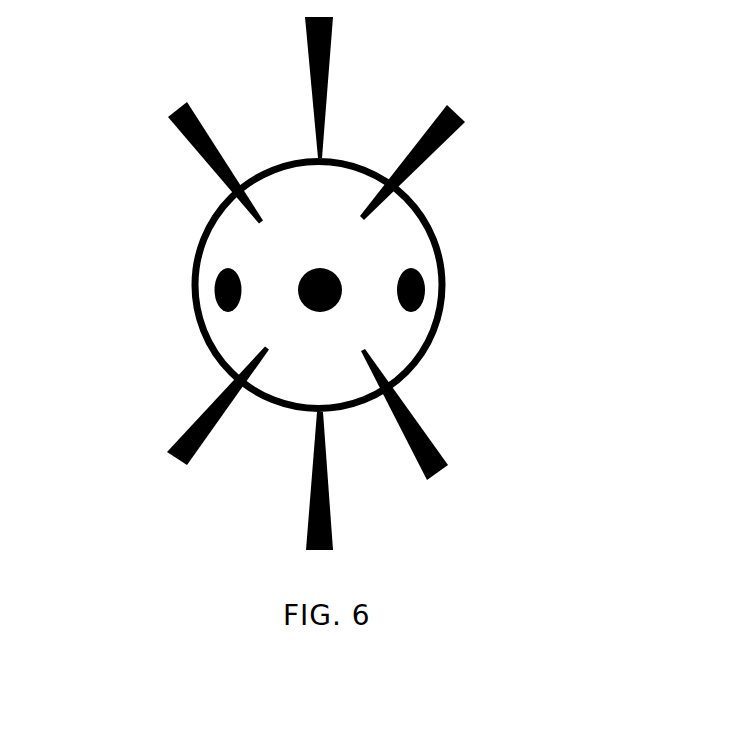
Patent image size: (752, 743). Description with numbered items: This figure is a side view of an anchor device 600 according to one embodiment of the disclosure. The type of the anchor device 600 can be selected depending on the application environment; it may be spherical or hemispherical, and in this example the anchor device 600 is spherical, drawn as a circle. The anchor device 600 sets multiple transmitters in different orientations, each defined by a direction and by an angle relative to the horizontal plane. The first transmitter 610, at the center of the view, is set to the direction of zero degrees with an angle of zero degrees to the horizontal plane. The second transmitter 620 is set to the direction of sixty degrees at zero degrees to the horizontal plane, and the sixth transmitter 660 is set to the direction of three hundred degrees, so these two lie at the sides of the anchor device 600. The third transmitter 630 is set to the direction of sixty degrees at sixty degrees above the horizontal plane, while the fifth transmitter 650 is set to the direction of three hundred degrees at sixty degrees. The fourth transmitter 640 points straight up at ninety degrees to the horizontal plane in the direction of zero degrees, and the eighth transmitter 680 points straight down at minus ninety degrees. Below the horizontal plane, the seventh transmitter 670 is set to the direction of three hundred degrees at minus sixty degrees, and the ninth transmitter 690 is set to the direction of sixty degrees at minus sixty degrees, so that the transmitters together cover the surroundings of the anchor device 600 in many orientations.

The anchor device 600 is at (443, 247).
The first transmitter 610 is at (302, 277).
The second transmitter 620 is at (424, 298).
The third transmitter 630 is at (439, 148).
The fourth transmitter 640 is at (332, 35).
The fifth transmitter 650 is at (170, 111).
The sixth transmitter 660 is at (216, 273).
The seventh transmitter 670 is at (181, 435).
The eighth transmitter 680 is at (330, 515).
The ninth transmitter 690 is at (426, 432).